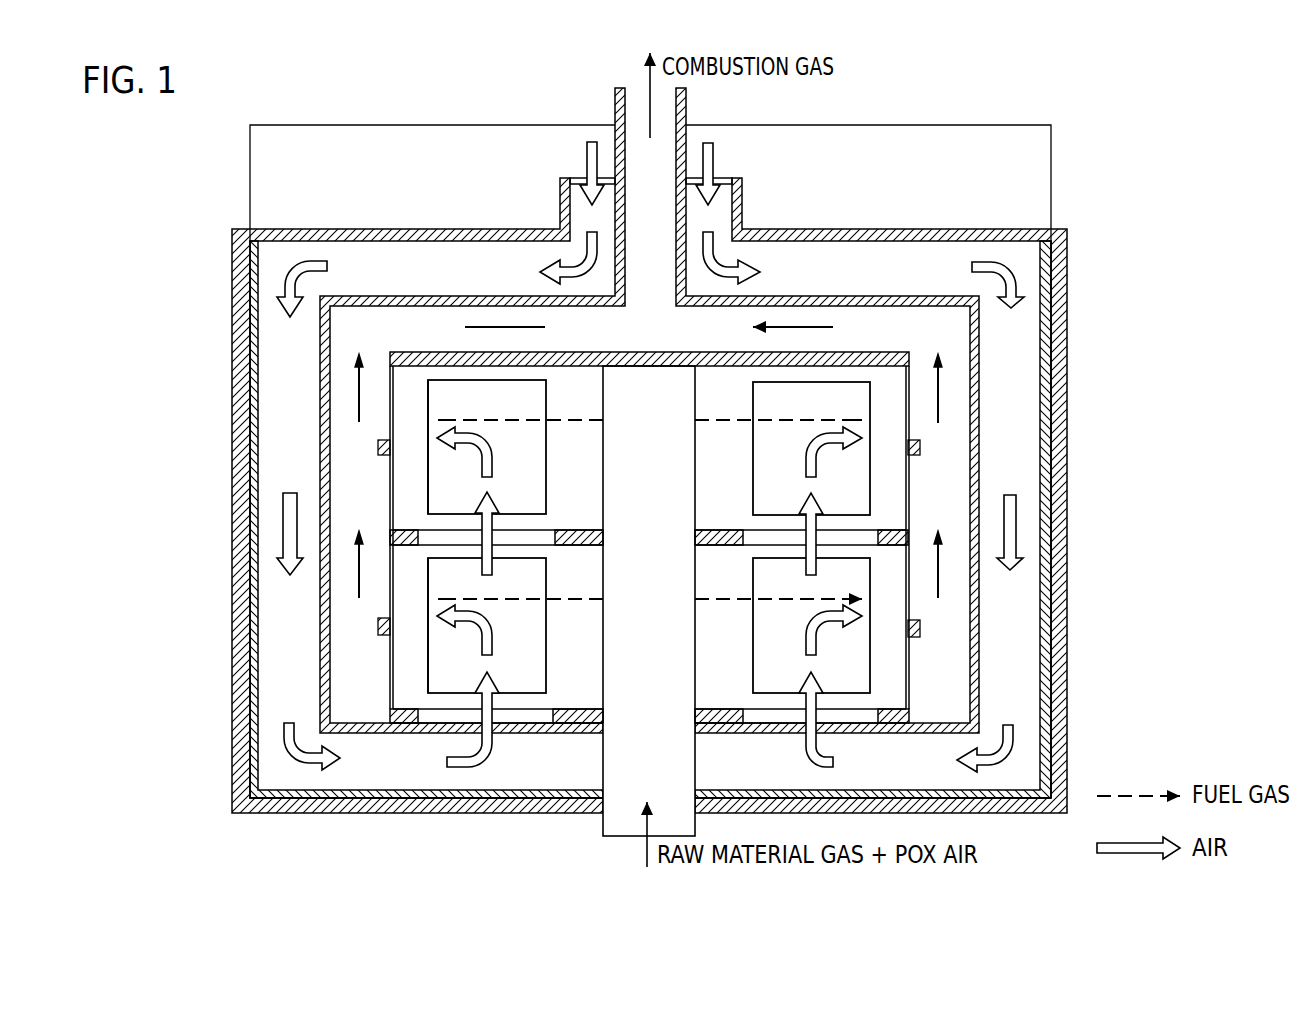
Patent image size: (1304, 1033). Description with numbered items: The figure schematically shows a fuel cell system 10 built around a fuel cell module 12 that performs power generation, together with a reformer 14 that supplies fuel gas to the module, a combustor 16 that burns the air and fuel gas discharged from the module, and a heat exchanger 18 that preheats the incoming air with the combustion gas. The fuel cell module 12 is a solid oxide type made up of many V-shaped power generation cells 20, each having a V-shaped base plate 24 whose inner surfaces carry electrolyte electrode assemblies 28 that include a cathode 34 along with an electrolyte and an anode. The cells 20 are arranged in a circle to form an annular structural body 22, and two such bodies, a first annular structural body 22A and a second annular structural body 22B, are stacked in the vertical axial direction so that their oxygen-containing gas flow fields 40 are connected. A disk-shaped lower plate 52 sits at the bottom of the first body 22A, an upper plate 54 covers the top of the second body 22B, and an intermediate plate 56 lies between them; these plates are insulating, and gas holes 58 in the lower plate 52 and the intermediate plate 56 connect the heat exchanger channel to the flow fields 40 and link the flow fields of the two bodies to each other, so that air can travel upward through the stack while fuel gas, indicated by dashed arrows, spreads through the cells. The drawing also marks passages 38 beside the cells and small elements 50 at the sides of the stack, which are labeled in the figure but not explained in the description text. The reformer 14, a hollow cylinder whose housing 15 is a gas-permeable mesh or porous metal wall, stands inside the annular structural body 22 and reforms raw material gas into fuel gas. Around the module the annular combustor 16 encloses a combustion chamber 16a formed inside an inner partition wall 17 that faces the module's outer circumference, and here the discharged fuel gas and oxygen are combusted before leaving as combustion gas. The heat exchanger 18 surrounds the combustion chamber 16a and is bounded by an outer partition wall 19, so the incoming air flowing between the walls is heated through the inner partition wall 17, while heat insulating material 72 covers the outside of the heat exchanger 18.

The fuel cell system 10 is at (183, 148).
The fuel cell module 12 is at (360, 512).
The reformer 14 is at (682, 601).
The housing 15 is at (603, 478).
The combustor 16 is at (726, 410).
The combustion chamber 16a is at (957, 433).
The inner partition wall 17 is at (982, 347).
The heat exchanger 18 is at (1052, 597).
The outer partition wall 19 is at (677, 495).
The power generation cell 20 is at (491, 590).
The annular structural body 22 is at (491, 521).
The first annular structural body 22A is at (387, 647).
The second annular structural body 22B is at (387, 383).
The base plate 24 is at (430, 712).
The electrolyte electrode assembly 28 is at (438, 405).
The cathode 34 is at (278, 536).
The air passage 38 is at (405, 472).
The oxygen-containing gas flow field 40 is at (445, 558).
The seal member 50 is at (920, 446).
The lower plate 52 is at (892, 710).
The upper plate 54 is at (883, 352).
The intermediate plate 56 is at (892, 530).
The gas hole 58 is at (519, 540).
The heat insulating material 72 is at (653, 495).